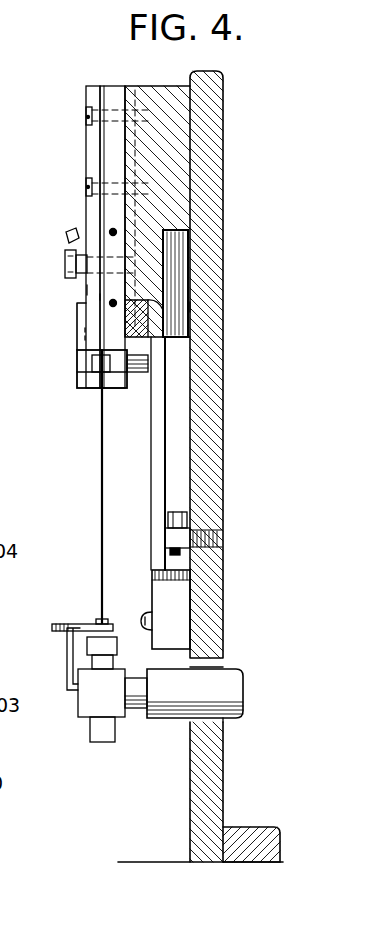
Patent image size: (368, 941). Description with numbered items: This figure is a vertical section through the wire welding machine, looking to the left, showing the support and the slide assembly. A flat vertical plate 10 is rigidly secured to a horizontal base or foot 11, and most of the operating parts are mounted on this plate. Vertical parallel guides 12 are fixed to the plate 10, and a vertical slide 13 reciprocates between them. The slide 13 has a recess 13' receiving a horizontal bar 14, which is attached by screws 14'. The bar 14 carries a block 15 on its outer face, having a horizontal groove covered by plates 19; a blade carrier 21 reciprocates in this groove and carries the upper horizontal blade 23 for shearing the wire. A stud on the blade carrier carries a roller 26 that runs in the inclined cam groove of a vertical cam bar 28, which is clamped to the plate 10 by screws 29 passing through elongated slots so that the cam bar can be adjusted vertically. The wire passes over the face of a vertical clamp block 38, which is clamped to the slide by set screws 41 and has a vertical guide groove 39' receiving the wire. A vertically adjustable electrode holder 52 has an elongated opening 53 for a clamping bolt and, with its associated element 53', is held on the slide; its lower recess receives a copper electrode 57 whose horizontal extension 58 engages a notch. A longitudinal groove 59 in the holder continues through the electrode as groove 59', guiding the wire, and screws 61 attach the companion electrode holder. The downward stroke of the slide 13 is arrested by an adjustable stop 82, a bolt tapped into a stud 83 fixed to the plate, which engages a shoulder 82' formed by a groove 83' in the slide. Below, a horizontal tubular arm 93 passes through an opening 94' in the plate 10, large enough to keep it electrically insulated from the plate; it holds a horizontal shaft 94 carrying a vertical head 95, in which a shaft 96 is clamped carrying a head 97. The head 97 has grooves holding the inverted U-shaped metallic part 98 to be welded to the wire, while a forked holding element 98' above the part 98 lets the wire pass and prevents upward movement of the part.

The vertical plate 10 is at (228, 108).
The foot 11 is at (252, 827).
The guides 12 is at (190, 487).
The slide 13 is at (200, 211).
The recess 13' is at (222, 288).
The bar 14 is at (200, 318).
The screws 14' is at (214, 287).
The block 15 is at (118, 389).
The plates 19 is at (80, 376).
The blade carrier 21 is at (92, 355).
The blade 23 is at (99, 389).
The roller 26 is at (149, 375).
The cam bar 28 is at (190, 598).
The screws 29 is at (143, 617).
The clamp block 38 is at (114, 91).
The guide groove 39' is at (73, 236).
The set screws 41 is at (84, 117).
The electrode holder 52 is at (93, 288).
The elongated opening 53 is at (81, 264).
The bolt head 53' is at (52, 240).
The electrode 57 is at (77, 348).
The horizontal extension 58 is at (85, 330).
The longitudinal groove 59 is at (67, 305).
The groove 59' is at (46, 347).
The screws 61 is at (109, 231).
The stop 82 is at (220, 523).
The shoulder 82' is at (219, 276).
The stud 83 is at (220, 548).
The groove 83' is at (235, 299).
The tubular arm 93 is at (178, 718).
The shaft 94 is at (138, 718).
The opening 94' is at (250, 733).
The head 95 is at (95, 687).
The shaft 96 is at (99, 735).
The head 97 is at (86, 653).
The metallic part 98 is at (112, 659).
The forked holding element 98' is at (82, 610).